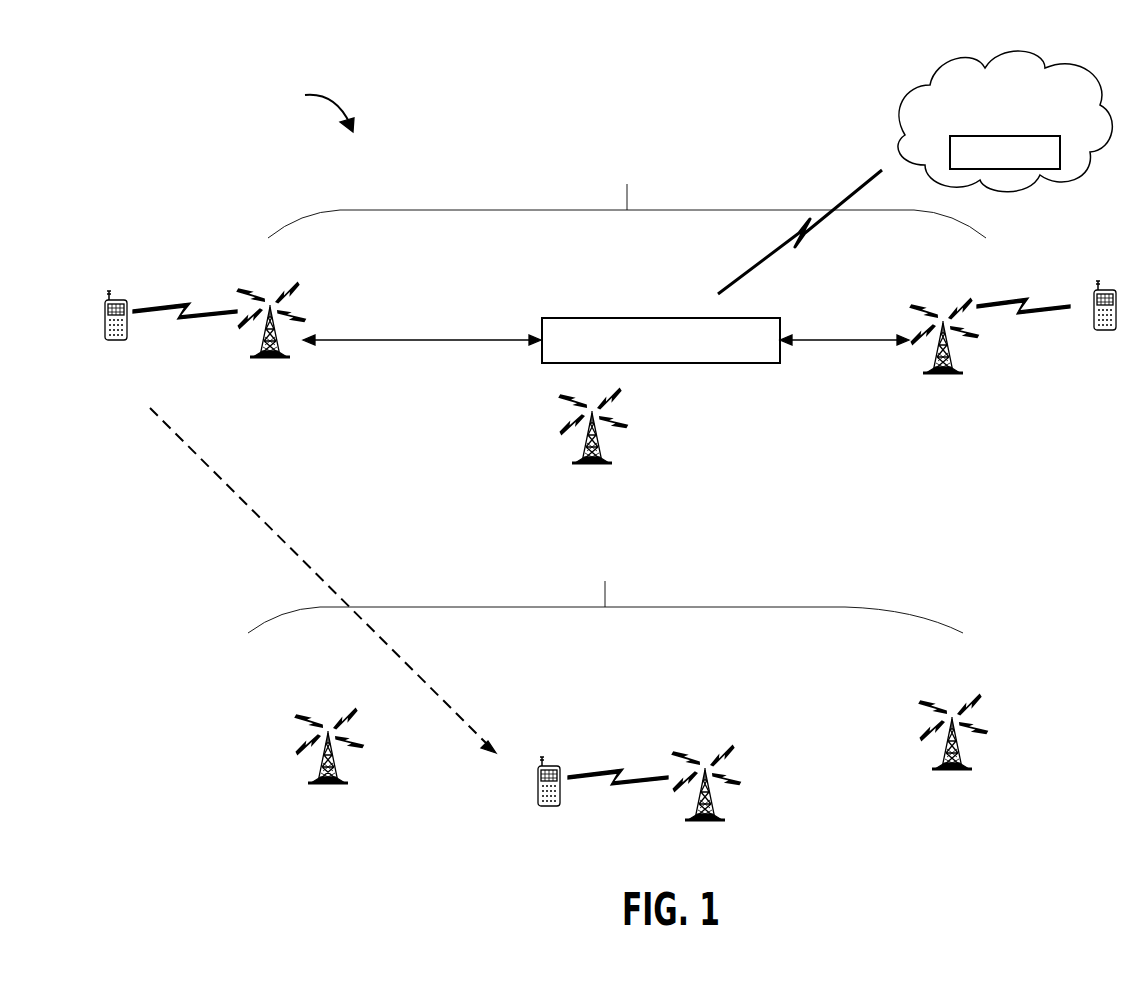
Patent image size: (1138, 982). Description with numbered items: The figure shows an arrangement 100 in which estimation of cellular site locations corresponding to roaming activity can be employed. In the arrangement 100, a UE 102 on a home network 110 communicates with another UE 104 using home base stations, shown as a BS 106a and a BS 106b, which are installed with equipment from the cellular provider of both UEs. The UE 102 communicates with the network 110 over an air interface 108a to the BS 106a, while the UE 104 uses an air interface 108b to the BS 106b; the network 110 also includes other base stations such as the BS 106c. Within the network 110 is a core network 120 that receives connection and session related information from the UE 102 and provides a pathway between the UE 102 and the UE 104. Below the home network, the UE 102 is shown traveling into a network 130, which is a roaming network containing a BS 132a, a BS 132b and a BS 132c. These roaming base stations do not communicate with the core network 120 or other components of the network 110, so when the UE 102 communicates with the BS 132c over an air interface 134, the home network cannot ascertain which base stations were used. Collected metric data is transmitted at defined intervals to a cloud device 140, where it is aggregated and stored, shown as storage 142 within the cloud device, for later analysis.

The arrangement 100 is at (311, 110).
The UE 102 is at (117, 340).
The UE 104 is at (1101, 282).
The BS 106a is at (265, 358).
The BS 106b is at (945, 374).
The BS 106c is at (590, 463).
The air interface 108a is at (190, 300).
The air interface 108b is at (1018, 298).
The home network 110 is at (627, 195).
The core network 120 is at (661, 340).
The roaming network 130 is at (605, 591).
The BS 132a is at (327, 784).
The BS 132b is at (950, 769).
The BS 132c is at (708, 824).
The air interface 134 is at (623, 766).
The cloud device 140 is at (972, 52).
The storage 142 is at (997, 172).